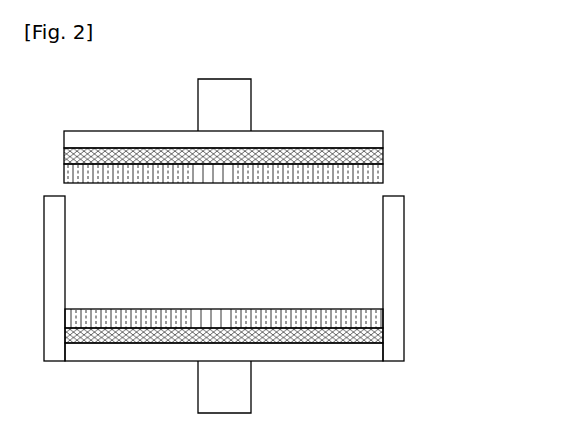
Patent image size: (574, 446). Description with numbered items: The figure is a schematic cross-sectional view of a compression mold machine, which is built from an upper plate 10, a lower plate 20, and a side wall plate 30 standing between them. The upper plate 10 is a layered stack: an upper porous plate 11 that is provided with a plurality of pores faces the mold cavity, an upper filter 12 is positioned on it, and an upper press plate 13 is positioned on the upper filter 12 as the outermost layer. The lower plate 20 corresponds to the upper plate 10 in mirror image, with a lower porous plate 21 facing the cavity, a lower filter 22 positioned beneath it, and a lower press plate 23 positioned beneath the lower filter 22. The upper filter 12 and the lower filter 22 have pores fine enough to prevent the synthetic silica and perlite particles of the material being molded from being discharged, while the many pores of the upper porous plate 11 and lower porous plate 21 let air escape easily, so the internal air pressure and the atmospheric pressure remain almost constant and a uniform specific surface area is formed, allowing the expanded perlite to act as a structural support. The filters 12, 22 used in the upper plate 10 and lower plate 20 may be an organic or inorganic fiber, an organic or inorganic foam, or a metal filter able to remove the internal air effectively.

The upper plate 10 is at (270, 152).
The upper porous plate 11 is at (250, 178).
The upper filter 12 is at (383, 157).
The upper press plate 13 is at (383, 139).
The lower plate 20 is at (273, 336).
The lower porous plate 21 is at (383, 314).
The lower filter 22 is at (383, 331).
The lower press plate 23 is at (252, 359).
The frame 30 is at (404, 251).